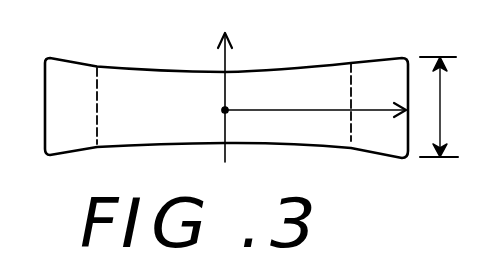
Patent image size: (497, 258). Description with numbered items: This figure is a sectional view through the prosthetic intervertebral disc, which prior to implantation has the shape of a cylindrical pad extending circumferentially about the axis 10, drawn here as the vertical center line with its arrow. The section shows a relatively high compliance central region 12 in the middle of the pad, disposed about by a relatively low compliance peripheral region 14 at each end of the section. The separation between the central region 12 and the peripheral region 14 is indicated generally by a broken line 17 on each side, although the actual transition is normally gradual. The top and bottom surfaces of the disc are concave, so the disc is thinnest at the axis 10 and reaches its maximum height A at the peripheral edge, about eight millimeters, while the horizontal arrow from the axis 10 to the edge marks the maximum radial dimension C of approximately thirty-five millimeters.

The axis 10 is at (228, 55).
The central region 12 is at (171, 118).
The peripheral region 14 is at (80, 117).
The broken line 17 is at (97, 99).
The maximum height A is at (440, 107).
The maximum radial dimension C is at (281, 108).